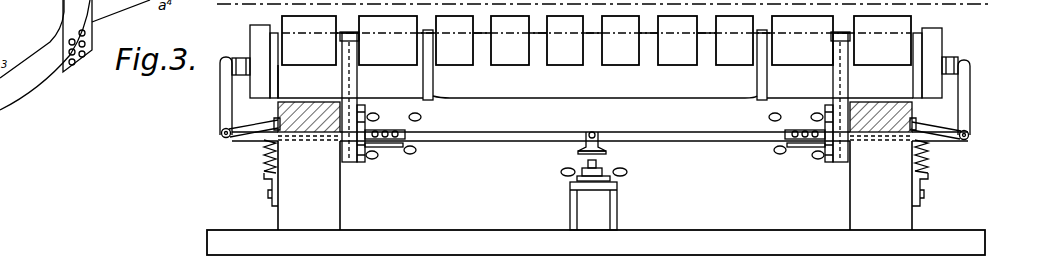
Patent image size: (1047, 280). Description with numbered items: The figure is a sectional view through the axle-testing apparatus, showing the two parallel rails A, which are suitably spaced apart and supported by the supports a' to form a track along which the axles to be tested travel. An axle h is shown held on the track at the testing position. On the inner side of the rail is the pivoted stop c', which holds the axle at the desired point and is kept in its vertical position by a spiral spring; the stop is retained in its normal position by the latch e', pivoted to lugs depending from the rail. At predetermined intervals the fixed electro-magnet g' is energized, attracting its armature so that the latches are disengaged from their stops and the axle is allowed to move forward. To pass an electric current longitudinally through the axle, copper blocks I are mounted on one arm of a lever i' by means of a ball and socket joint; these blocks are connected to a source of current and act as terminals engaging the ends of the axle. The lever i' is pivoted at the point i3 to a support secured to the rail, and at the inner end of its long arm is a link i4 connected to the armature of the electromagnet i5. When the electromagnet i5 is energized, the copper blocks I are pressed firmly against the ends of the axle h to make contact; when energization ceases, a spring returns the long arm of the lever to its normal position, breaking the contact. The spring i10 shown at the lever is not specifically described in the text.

The copper blocks I is at (958, 30).
The rails A is at (290, 100).
The axle h is at (595, 58).
The stop c' is at (595, 97).
The latch e' is at (593, 145).
The electro-magnet g' is at (595, 149).
The lever i' is at (590, 113).
The pivot point i3 is at (222, 140).
The spring i10 is at (264, 160).
The link i4 is at (578, 151).
The electromagnet i5 is at (600, 170).
The supports a' is at (595, 185).